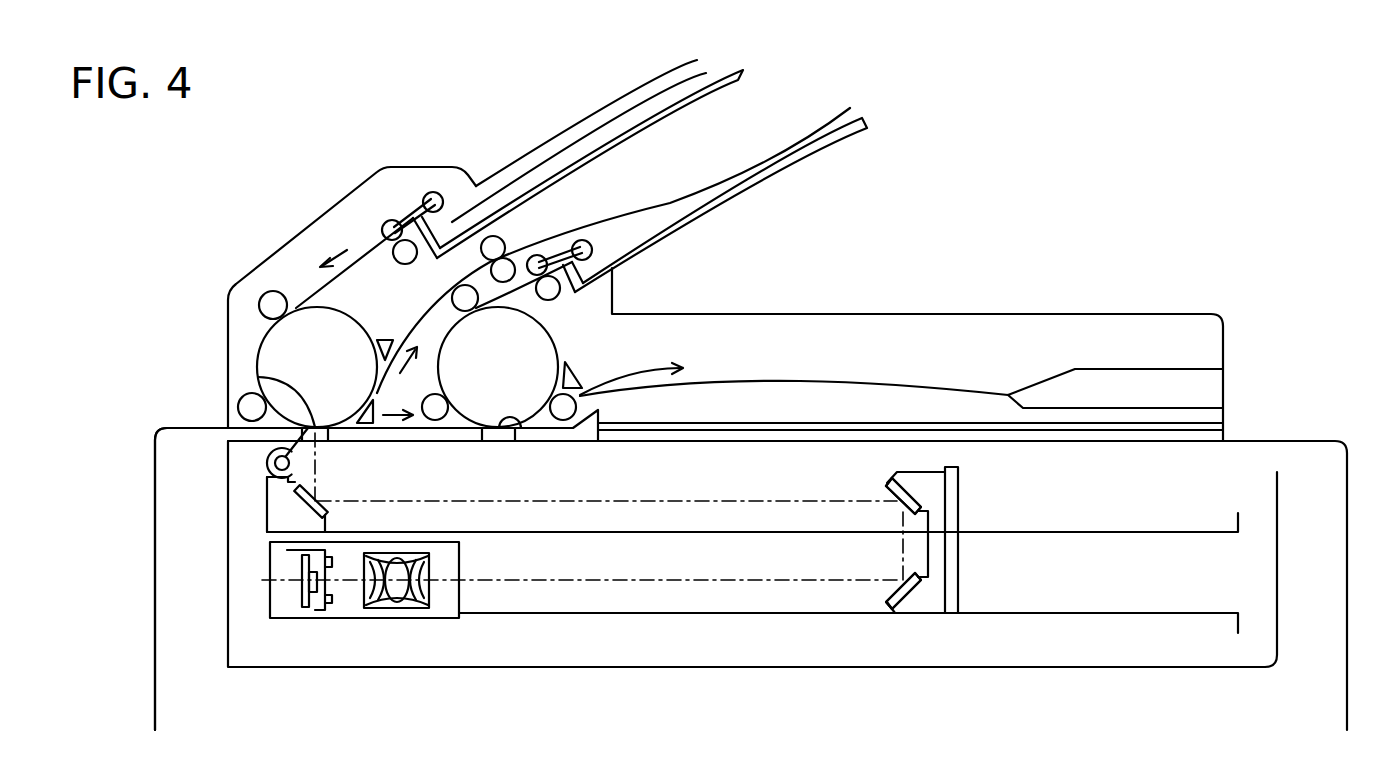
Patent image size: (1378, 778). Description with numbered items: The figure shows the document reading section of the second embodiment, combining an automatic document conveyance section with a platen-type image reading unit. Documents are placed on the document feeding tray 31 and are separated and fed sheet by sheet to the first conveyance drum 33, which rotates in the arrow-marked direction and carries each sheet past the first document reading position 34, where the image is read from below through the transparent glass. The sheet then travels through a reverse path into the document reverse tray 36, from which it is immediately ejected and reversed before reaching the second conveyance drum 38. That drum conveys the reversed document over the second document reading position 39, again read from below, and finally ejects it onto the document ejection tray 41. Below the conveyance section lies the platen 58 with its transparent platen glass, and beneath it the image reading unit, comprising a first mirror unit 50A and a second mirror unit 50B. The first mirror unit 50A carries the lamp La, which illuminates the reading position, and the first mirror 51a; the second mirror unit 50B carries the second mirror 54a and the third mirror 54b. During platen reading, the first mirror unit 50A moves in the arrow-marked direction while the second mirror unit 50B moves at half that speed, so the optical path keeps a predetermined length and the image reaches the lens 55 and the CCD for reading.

The document feeding tray 31 is at (741, 82).
The first conveyance drum 33 is at (272, 342).
The first document reading position 34 is at (258, 377).
The document reverse tray 36 is at (838, 148).
The second conveyance drum 38 is at (543, 338).
The second document reading position 39 is at (523, 428).
The document ejection tray 41 is at (855, 381).
The platen 58 is at (750, 441).
The lamp La is at (268, 474).
The first mirror 51a is at (258, 537).
The first mirror unit 50A is at (233, 576).
The second mirror unit 50B is at (930, 485).
The second mirror 54a is at (900, 496).
The third mirror 54b is at (908, 600).
The element CCD is at (302, 598).
The imaging lens 55 is at (400, 608).